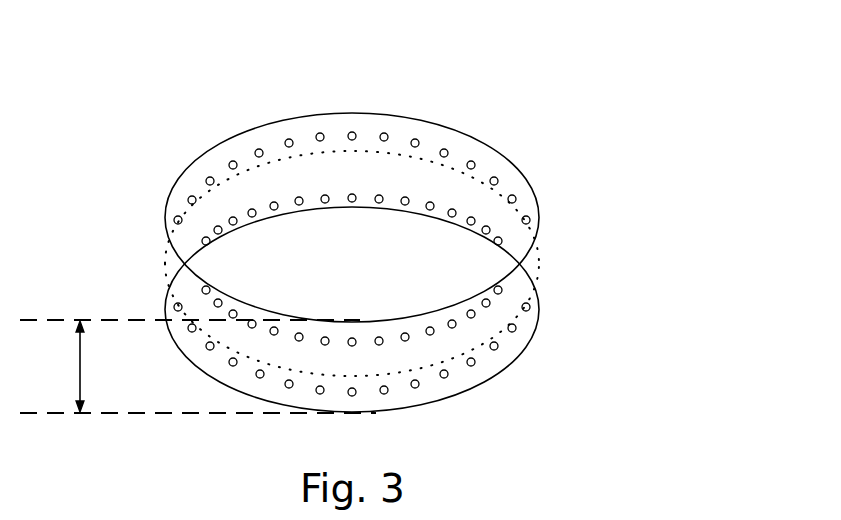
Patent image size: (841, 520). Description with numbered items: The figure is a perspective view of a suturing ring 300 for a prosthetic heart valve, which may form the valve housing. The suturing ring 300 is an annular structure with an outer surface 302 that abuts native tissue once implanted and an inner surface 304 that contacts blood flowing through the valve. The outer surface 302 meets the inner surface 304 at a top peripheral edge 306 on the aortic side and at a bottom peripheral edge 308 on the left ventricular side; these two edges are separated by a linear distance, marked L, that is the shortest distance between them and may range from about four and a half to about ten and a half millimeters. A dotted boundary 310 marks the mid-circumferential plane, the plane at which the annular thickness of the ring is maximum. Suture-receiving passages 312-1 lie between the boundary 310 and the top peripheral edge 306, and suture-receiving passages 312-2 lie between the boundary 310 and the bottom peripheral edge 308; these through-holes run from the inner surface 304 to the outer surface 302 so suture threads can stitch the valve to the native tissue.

The suturing ring 300 is at (359, 70).
The outer surface 302 is at (213, 360).
The inner surface 304 is at (262, 182).
The top peripheral edge 306 is at (438, 125).
The bottom peripheral edge 308 is at (470, 390).
The boundary of mid-circumferential plane 310 is at (488, 328).
The suture-receiving passages 312-1 is at (492, 175).
The suture-receiving passages 312-2 is at (356, 395).